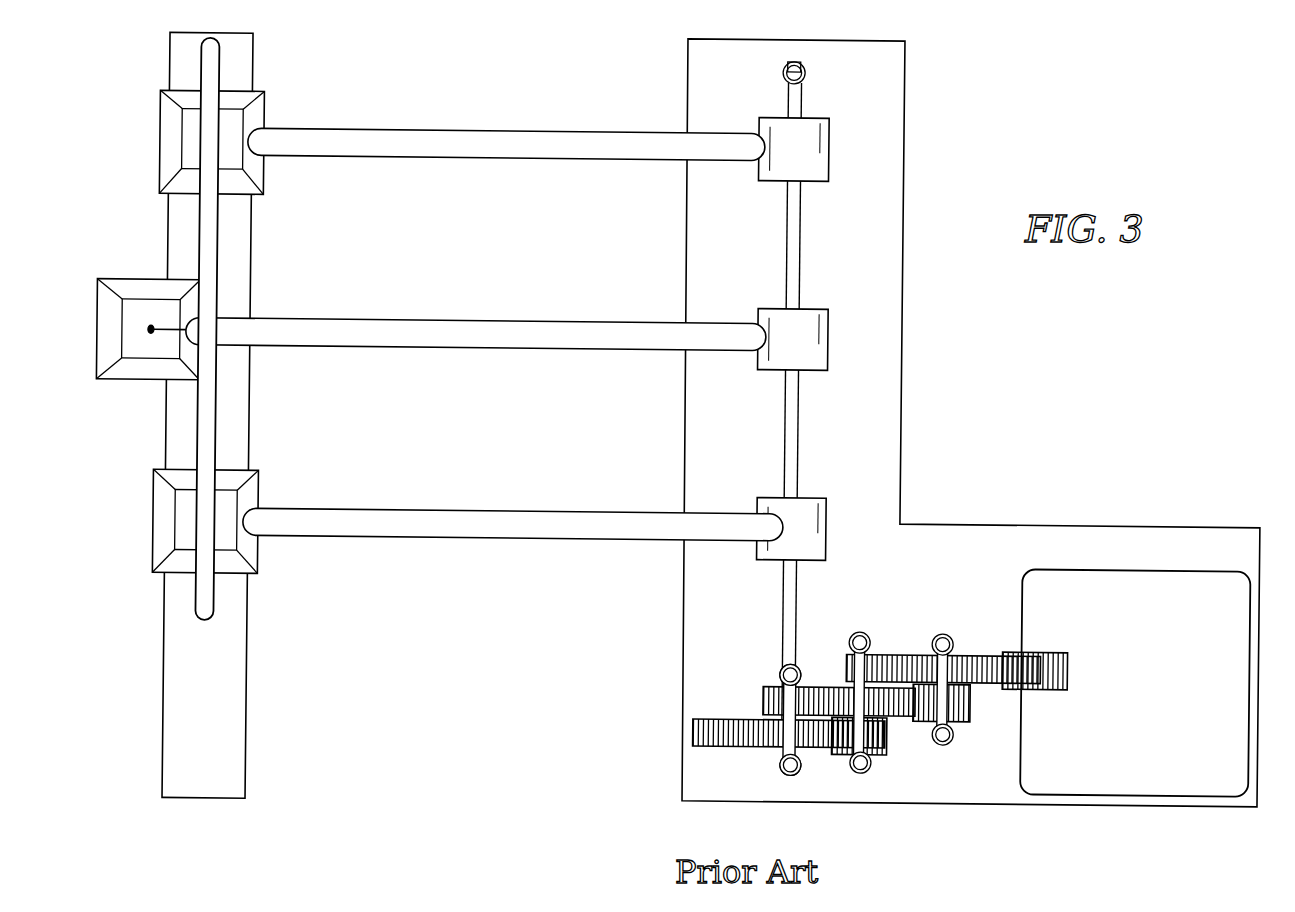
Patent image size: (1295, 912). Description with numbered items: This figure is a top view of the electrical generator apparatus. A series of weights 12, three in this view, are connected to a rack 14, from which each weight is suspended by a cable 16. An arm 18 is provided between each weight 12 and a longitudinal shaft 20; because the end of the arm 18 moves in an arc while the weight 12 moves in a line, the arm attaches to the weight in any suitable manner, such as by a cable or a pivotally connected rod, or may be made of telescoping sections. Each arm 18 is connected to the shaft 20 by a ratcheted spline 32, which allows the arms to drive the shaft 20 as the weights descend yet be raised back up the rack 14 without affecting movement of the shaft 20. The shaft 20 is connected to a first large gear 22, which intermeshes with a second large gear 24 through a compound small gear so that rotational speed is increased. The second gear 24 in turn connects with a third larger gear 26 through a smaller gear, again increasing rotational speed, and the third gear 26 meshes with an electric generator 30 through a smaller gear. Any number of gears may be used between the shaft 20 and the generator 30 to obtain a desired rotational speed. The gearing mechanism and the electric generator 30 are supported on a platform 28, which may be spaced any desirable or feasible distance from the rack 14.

The weight 12 is at (164, 94).
The rack 14 is at (217, 67).
The cable 16 is at (164, 333).
The arm 18 is at (486, 133).
The longitudinal shaft 20 is at (799, 246).
The first gear 22 is at (746, 753).
The second gear 24 is at (766, 707).
The third gear 26 is at (849, 668).
The platform 28 is at (933, 574).
The electric generator 30 is at (1138, 655).
The ratcheted spline 32 is at (803, 160).